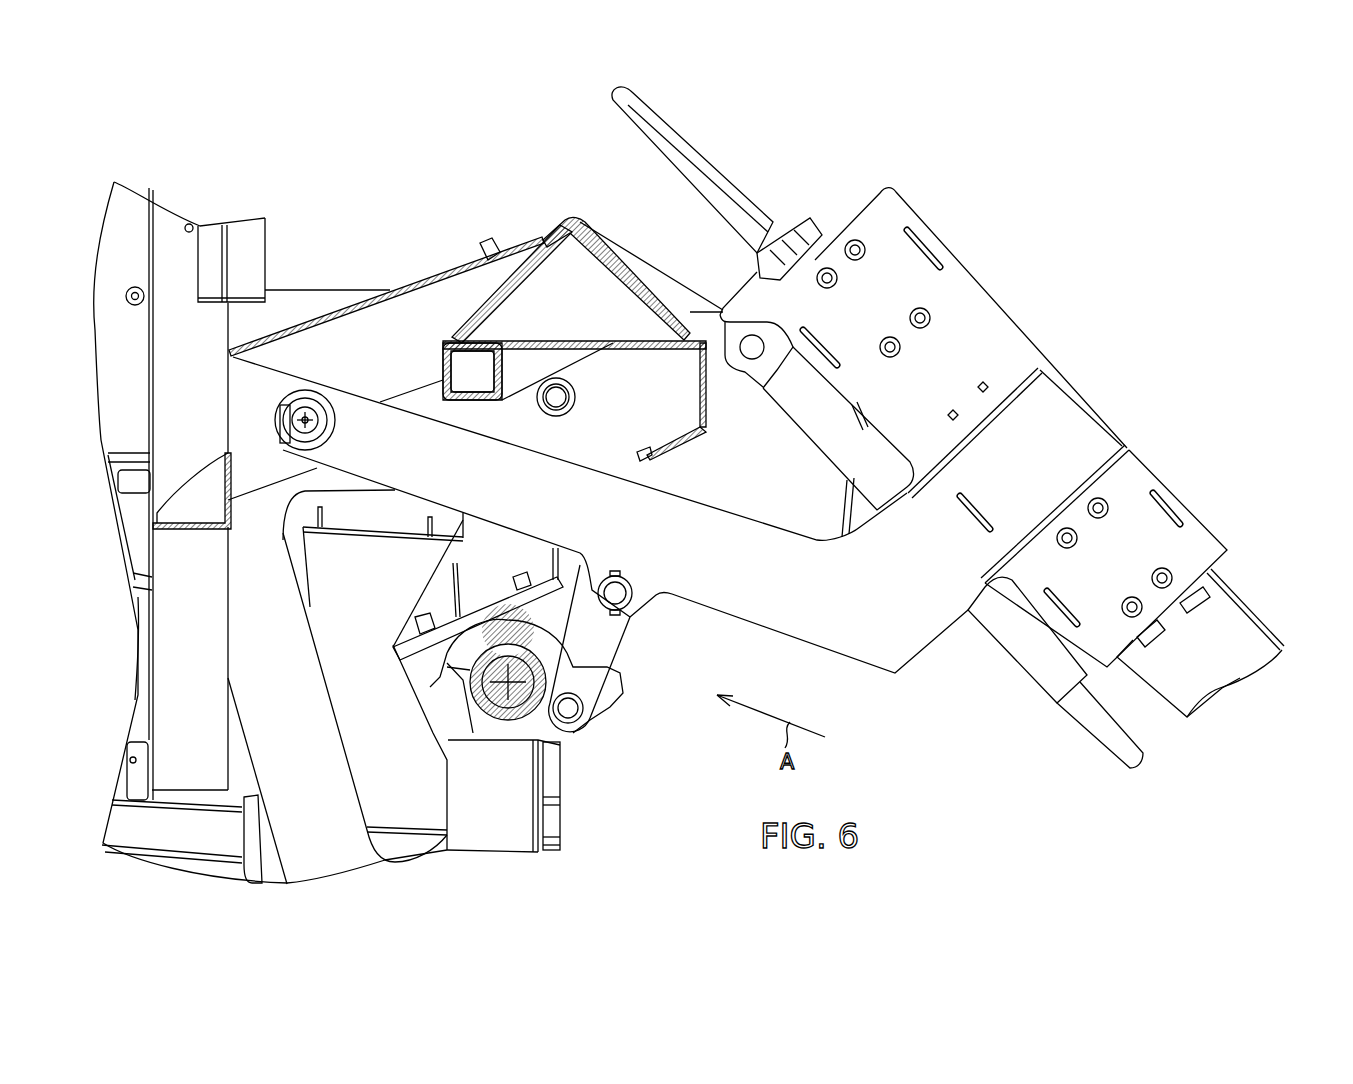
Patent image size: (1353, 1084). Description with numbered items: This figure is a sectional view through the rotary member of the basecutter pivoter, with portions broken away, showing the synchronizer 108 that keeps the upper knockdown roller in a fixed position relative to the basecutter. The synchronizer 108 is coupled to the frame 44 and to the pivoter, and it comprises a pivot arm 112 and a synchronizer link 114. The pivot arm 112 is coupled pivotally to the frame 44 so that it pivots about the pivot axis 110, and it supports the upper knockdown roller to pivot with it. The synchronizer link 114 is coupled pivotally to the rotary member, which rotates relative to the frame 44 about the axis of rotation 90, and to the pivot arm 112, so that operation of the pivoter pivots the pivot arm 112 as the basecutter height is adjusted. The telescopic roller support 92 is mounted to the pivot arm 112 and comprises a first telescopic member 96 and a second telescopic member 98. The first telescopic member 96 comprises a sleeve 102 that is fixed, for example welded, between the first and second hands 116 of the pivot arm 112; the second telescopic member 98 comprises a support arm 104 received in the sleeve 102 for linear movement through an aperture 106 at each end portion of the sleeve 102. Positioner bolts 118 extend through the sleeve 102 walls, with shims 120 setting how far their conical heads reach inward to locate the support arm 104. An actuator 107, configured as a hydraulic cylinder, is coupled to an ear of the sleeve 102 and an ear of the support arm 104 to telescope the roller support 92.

The frame 44 is at (493, 603).
The axis of rotation 90 is at (507, 682).
The telescopic roller support 92 is at (1143, 558).
The first telescopic member 96 is at (1128, 480).
The second telescopic member 98 is at (1228, 627).
The sleeve 102 is at (1000, 330).
The support arm 104 is at (1222, 690).
The aperture 106 is at (813, 235).
The actuator 107 is at (1013, 630).
The synchronizer 108 is at (757, 643).
The pivot axis 110 is at (310, 417).
The pivot arm 112 is at (692, 527).
The synchronizer link 114 is at (600, 652).
The hand 116 is at (1080, 467).
The positioner bolt 118 is at (925, 330).
The shim 120 is at (1195, 605).